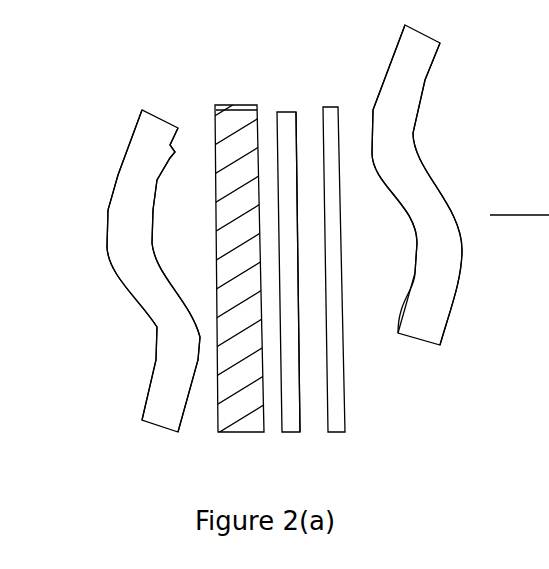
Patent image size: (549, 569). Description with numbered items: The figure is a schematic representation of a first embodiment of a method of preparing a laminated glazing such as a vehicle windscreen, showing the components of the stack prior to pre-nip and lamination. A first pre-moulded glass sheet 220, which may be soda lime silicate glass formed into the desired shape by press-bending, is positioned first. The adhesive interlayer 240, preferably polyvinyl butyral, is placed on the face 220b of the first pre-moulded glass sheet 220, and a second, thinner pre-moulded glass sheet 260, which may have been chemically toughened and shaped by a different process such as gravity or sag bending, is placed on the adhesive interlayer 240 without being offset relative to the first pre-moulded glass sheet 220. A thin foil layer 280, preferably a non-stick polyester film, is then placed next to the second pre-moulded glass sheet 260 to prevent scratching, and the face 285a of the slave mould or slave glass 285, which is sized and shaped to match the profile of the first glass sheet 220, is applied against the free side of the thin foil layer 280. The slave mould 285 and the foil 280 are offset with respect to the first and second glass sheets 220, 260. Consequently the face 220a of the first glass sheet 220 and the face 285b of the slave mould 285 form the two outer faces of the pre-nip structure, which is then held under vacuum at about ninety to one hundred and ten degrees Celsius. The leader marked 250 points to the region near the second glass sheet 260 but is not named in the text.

The first glass sheet 220 is at (152, 428).
The face of the first glass sheet 220a is at (118, 168).
The face of the first pre-moulded glass sheet 220b is at (175, 152).
The adhesive interlayer 240 is at (240, 432).
The interface 250 is at (297, 125).
The second glass sheet 260 is at (290, 432).
The thin foil layer 280 is at (343, 432).
The shaped mould 285 is at (436, 340).
The face of the slave mould 285a is at (415, 272).
The face of the slave mould 285b is at (428, 78).